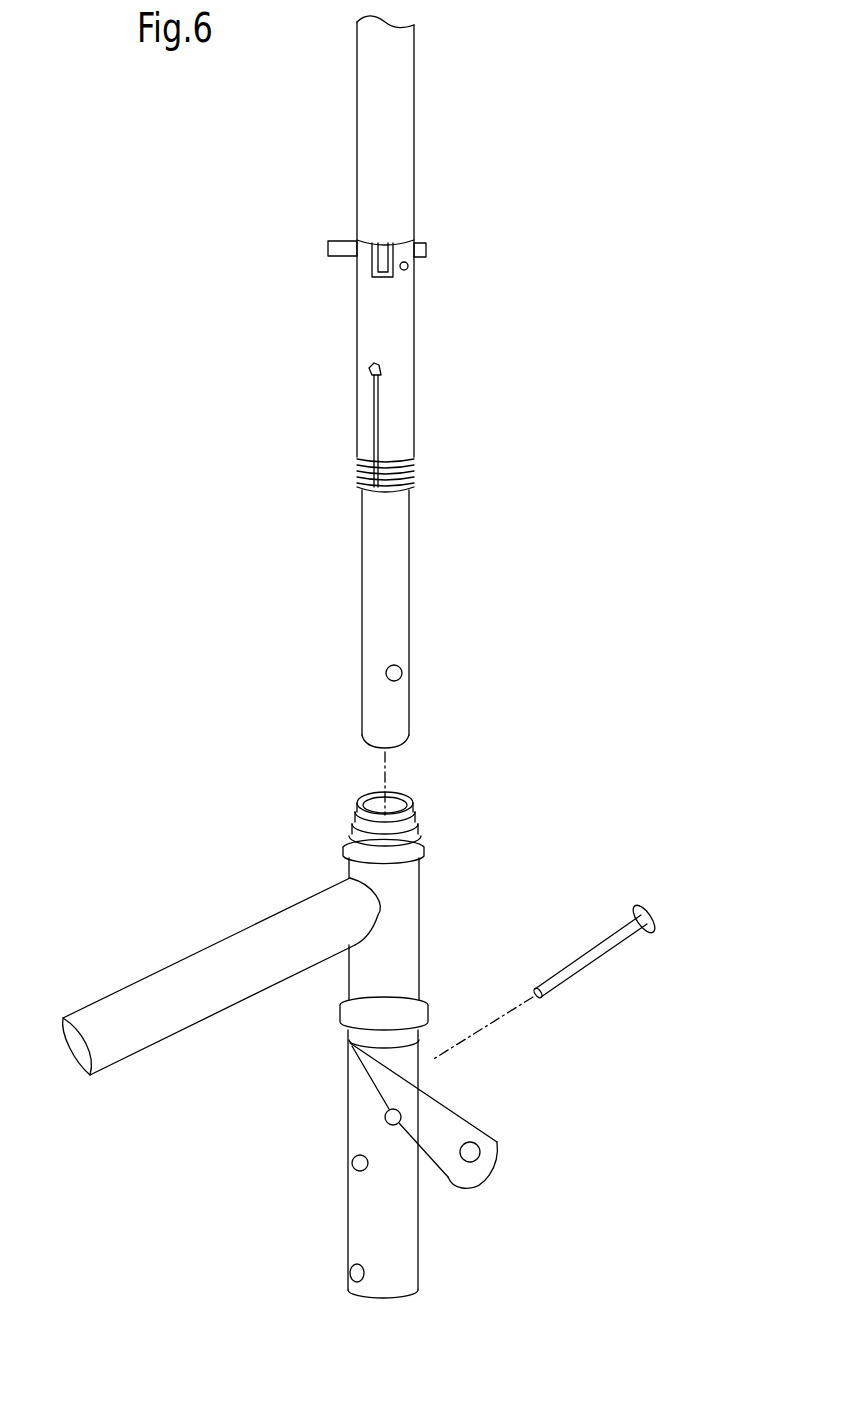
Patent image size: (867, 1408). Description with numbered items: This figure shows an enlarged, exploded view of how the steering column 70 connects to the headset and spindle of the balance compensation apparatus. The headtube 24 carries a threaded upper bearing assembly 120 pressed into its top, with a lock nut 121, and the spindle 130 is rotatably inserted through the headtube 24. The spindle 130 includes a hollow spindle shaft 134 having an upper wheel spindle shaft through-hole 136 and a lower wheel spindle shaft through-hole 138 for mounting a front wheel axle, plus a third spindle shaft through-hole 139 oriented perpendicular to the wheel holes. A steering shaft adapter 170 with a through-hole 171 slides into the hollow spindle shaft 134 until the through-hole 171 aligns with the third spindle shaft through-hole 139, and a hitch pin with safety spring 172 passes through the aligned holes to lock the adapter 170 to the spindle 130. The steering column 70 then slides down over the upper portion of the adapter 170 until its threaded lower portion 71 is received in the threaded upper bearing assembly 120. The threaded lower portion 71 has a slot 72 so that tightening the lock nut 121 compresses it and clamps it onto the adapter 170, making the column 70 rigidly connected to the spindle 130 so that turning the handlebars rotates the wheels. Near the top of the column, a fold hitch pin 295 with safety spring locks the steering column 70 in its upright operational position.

The steering column 70 is at (356, 141).
The fold hitch pin 295 is at (426, 245).
The slot 72 is at (368, 406).
The threaded lower portion 71 is at (416, 468).
The steering shaft adapter 170 is at (402, 572).
The through-hole 171 is at (385, 673).
The threaded upper bearing assembly 120 is at (428, 836).
The lock nut 121 is at (355, 803).
The headtube 24 is at (410, 953).
The hollow spindle shaft 134 is at (360, 1212).
The spindle 130 is at (466, 1203).
The third spindle shaft through-hole 139 is at (386, 1113).
The upper wheel spindle shaft through-hole 136 is at (352, 1162).
The lower wheel spindle shaft through-hole 138 is at (350, 1279).
The hitch pin with safety spring 172 is at (640, 908).